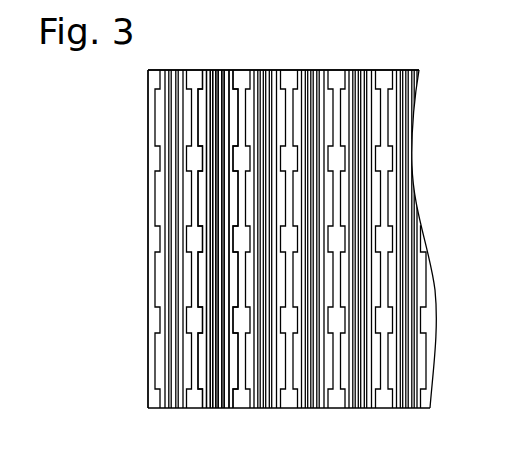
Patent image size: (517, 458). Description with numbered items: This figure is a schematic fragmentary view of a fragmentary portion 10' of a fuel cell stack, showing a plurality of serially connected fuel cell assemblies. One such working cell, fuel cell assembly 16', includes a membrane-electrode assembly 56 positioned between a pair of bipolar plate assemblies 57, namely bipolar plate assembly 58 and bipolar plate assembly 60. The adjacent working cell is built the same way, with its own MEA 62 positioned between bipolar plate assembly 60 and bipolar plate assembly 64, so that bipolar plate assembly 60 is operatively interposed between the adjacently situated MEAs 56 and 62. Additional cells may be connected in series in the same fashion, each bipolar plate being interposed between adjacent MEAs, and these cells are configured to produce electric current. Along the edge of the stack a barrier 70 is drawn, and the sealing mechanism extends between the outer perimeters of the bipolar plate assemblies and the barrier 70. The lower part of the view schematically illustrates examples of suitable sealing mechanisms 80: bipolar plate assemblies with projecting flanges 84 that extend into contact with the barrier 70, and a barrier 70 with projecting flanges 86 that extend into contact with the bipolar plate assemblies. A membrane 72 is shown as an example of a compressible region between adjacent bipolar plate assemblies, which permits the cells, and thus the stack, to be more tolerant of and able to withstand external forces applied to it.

The fragmentary portion 10' is at (244, 239).
The fuel cell assembly 16' is at (171, 258).
The membrane-electrode assembly 56 is at (175, 62).
The bipolar plate assemblies 57 is at (227, 327).
The bipolar plate assembly 58 is at (148, 88).
The bipolar plate assembly 60 is at (197, 70).
The membrane-electrode assembly 62 is at (221, 62).
The bipolar plate assembly 64 is at (256, 70).
The barrier 70 is at (356, 62).
The membrane 72 is at (420, 70).
The sealing mechanisms 80 is at (382, 414).
The projecting flanges 84 is at (299, 410).
The projecting flanges 86 is at (409, 410).